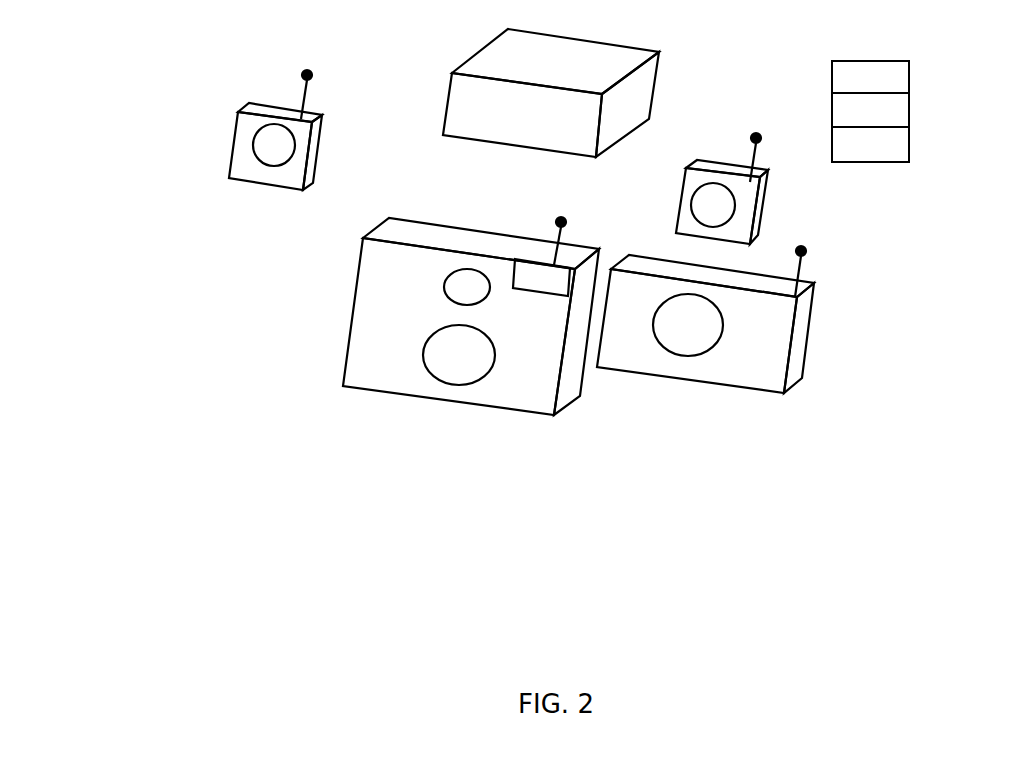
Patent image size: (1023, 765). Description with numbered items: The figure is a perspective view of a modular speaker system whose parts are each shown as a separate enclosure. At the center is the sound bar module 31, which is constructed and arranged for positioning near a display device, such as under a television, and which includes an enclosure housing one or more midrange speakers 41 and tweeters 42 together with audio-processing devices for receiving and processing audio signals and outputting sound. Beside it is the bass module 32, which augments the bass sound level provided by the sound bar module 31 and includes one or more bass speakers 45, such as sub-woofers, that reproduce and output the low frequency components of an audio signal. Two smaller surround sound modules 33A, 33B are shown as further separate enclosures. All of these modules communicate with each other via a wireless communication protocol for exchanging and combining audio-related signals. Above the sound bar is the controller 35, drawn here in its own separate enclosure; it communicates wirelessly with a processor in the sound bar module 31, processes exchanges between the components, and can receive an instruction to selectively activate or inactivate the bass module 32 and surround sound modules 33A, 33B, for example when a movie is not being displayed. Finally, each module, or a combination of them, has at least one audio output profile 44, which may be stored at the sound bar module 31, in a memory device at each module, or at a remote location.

The sound bar module 31 is at (322, 335).
The bass module 32 is at (659, 383).
The surround sound module 33A is at (225, 143).
The surround sound module 33B is at (777, 187).
The controller 35 is at (447, 110).
The midrange speaker 41 is at (448, 368).
The tweeter 42 is at (460, 285).
The audio output profile 44 is at (910, 147).
The bass speaker 45 is at (713, 345).